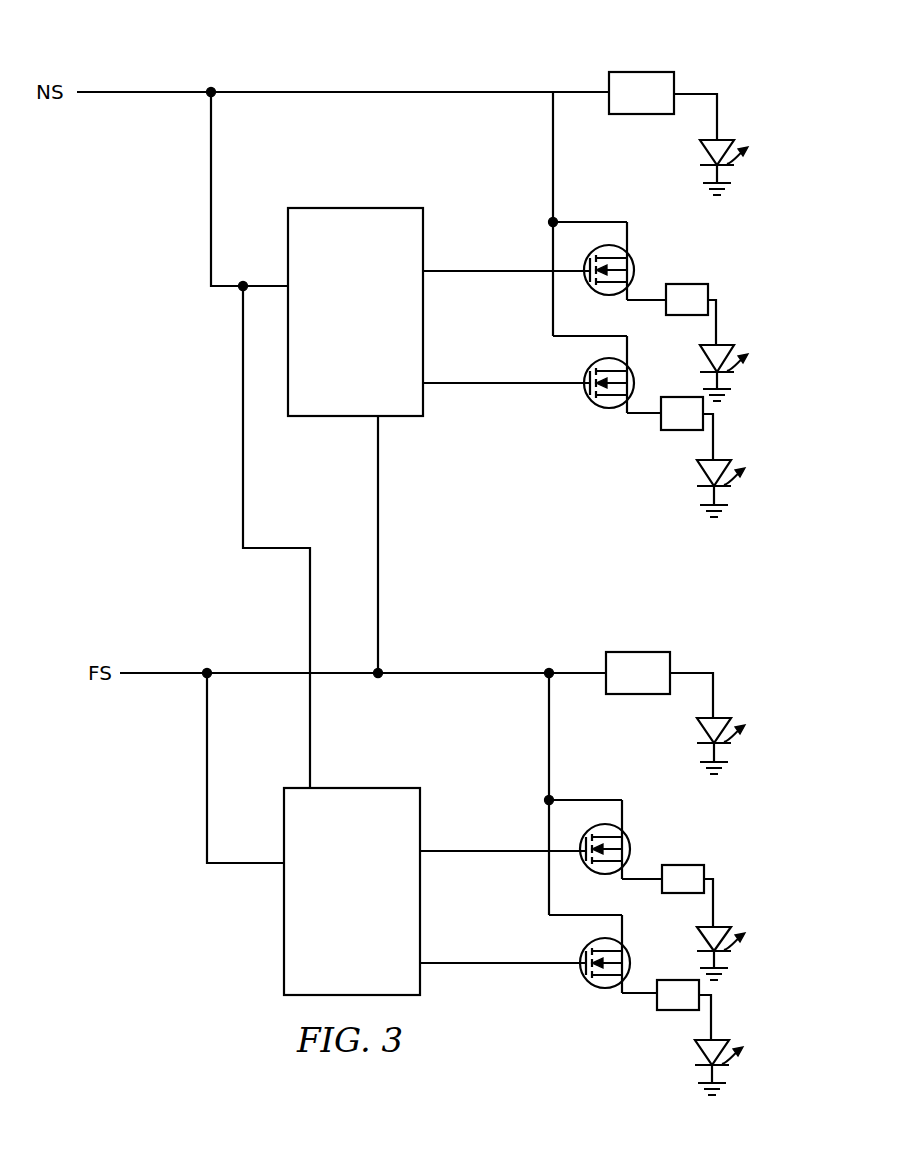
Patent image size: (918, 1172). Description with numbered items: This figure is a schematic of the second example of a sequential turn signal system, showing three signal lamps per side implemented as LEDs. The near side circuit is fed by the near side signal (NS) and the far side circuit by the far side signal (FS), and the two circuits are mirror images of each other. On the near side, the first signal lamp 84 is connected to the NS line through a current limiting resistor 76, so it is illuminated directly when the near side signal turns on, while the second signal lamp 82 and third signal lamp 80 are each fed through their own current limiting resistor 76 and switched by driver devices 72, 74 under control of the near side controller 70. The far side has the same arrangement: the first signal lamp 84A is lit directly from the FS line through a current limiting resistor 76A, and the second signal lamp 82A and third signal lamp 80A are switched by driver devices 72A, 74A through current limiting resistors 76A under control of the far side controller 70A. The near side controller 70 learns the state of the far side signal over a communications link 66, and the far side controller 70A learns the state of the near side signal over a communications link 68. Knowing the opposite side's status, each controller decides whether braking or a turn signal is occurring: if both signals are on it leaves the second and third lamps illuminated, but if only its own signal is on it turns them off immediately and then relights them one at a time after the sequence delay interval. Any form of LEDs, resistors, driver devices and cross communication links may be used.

The communications link 66 is at (378, 502).
The communications link 68 is at (243, 487).
The near side controller 70 is at (439, 312).
The far side controller 70A is at (435, 891).
The driver device 72 is at (630, 258).
The driver device 72A is at (626, 838).
The driver device 74 is at (630, 372).
The driver device 74A is at (626, 952).
The current limiting resistor 76 is at (622, 72).
The current limiting resistor 76A is at (620, 652).
The third signal lamp 80 is at (725, 460).
The third signal lamp 80A is at (723, 1040).
The second signal lamp 82 is at (728, 345).
The second signal lamp 82A is at (725, 927).
The first signal lamp 84 is at (728, 140).
The first signal lamp 84A is at (725, 718).